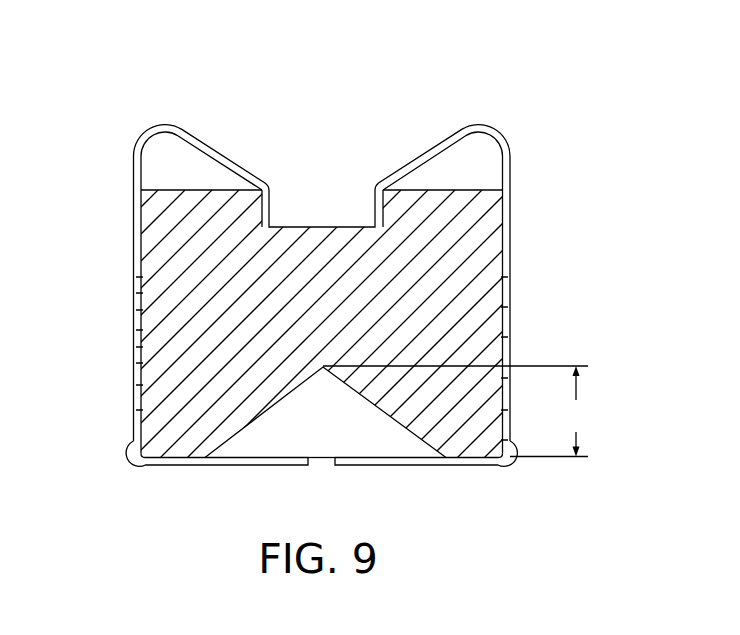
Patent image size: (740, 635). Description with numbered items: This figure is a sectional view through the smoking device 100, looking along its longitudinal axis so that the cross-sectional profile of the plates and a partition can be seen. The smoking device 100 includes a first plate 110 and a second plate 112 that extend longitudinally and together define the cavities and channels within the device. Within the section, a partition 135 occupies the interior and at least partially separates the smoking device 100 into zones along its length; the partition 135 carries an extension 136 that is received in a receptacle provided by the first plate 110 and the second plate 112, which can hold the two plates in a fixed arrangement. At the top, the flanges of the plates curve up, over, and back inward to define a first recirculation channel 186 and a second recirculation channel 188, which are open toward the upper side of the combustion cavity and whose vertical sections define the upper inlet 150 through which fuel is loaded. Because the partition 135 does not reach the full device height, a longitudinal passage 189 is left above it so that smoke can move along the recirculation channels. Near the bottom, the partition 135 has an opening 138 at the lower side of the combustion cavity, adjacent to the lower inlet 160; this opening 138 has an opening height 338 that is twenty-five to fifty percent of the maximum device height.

The smoking device 100 is at (158, 97).
The first plate 110 is at (160, 467).
The second plate 112 is at (503, 466).
The partition 135 is at (483, 257).
The extension 136 is at (150, 350).
The opening 138 is at (352, 445).
The upper inlet 150 is at (312, 226).
The lower inlet 160 is at (318, 459).
The first recirculation channel 186 is at (188, 157).
The second recirculation channel 188 is at (475, 150).
The longitudinal passage 189 is at (158, 177).
The opening height 338 is at (459, 411).